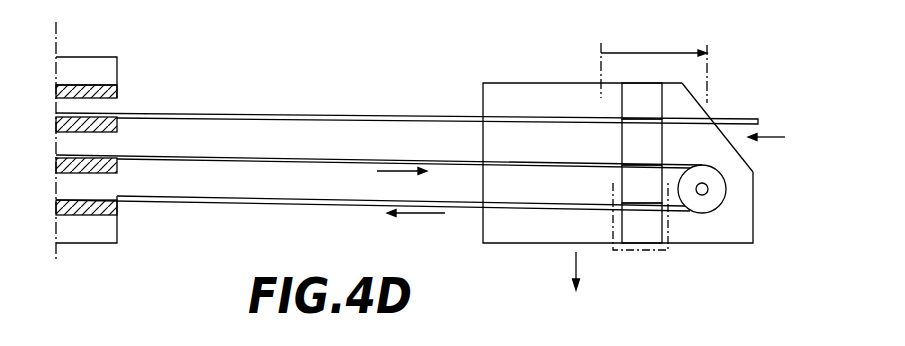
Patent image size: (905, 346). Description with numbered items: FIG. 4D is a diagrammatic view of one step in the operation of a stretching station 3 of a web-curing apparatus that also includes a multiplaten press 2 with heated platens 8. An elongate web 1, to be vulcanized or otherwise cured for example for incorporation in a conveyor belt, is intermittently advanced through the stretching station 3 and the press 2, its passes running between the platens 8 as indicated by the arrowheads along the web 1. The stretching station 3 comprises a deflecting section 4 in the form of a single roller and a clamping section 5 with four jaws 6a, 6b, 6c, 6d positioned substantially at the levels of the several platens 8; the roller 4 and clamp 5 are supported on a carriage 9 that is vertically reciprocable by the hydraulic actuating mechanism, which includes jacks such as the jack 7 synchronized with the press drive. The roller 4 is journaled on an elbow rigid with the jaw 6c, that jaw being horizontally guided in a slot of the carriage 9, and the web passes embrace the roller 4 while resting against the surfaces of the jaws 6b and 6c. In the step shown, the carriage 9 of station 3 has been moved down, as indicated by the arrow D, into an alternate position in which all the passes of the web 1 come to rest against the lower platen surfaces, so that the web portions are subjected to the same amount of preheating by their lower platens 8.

The web 1 is at (277, 198).
The multiplaten press 2 is at (126, 40).
The stretching station 3 is at (720, 102).
The deflecting section 4 is at (727, 183).
The clamping section 5 is at (617, 258).
The jaw 6a is at (654, 235).
The jaw 6b is at (654, 197).
The jaw 6c is at (655, 155).
The jaw 6d is at (657, 111).
The jack 7 is at (343, 114).
The platen 8 is at (119, 122).
The carriage 9 is at (717, 245).
The arrow D is at (575, 262).